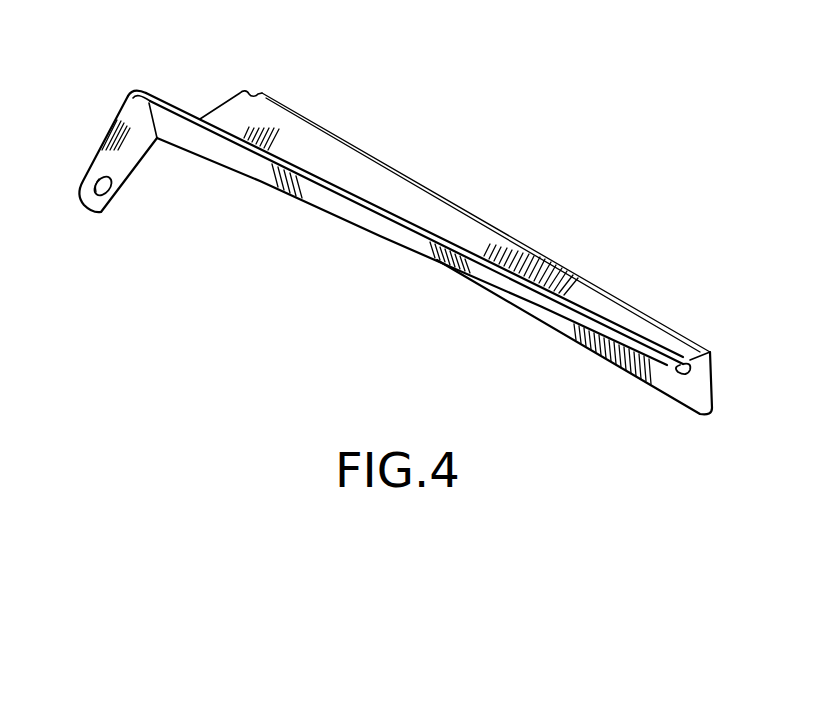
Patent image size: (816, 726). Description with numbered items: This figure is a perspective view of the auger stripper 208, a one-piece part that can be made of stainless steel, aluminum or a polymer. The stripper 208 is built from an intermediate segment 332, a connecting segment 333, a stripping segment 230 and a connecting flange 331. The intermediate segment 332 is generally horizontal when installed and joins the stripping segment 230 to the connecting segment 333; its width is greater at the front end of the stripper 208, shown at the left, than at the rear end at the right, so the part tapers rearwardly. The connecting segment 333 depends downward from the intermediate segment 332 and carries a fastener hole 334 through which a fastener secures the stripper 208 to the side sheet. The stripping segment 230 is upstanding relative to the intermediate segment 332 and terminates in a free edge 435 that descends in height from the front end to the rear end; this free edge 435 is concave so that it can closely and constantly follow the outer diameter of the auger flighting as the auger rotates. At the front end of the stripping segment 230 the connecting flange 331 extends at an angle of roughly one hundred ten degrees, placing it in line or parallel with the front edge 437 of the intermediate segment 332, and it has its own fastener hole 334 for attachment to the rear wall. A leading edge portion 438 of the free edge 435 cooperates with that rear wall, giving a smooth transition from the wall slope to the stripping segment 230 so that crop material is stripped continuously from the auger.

The auger stripper 208 is at (613, 205).
The stripping segment 230 is at (241, 161).
The connecting flange 331 is at (121, 158).
The intermediate segment 332 is at (300, 142).
The connecting segment 333 is at (575, 340).
The fastener hole 334 is at (110, 198).
The free edge 435 is at (338, 193).
The front edge 437 is at (213, 112).
The leading edge portion 438 is at (151, 84).